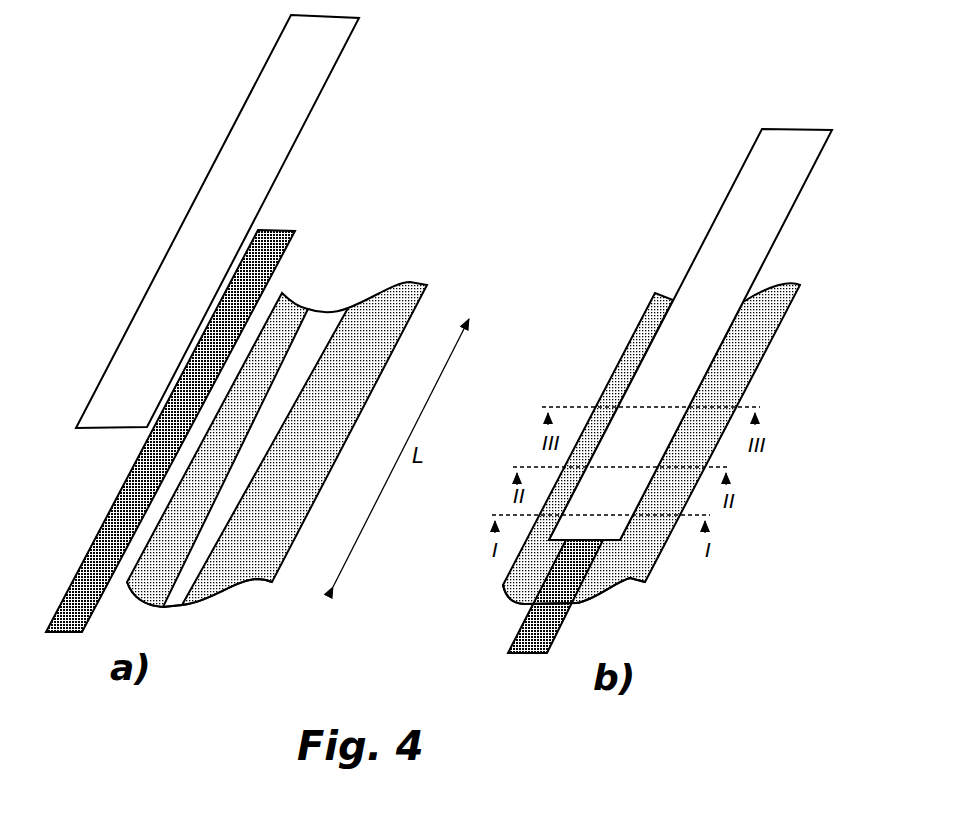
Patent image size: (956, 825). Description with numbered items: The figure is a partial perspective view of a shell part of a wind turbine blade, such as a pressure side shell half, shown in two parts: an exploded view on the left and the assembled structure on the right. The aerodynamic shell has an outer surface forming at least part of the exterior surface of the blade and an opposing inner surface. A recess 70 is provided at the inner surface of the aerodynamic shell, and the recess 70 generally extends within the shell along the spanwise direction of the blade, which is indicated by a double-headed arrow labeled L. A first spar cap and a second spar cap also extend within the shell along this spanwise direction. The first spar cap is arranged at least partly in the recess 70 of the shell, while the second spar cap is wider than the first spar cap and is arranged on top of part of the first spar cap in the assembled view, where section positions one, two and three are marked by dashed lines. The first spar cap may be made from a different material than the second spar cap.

The recess 70 is at (320, 323).